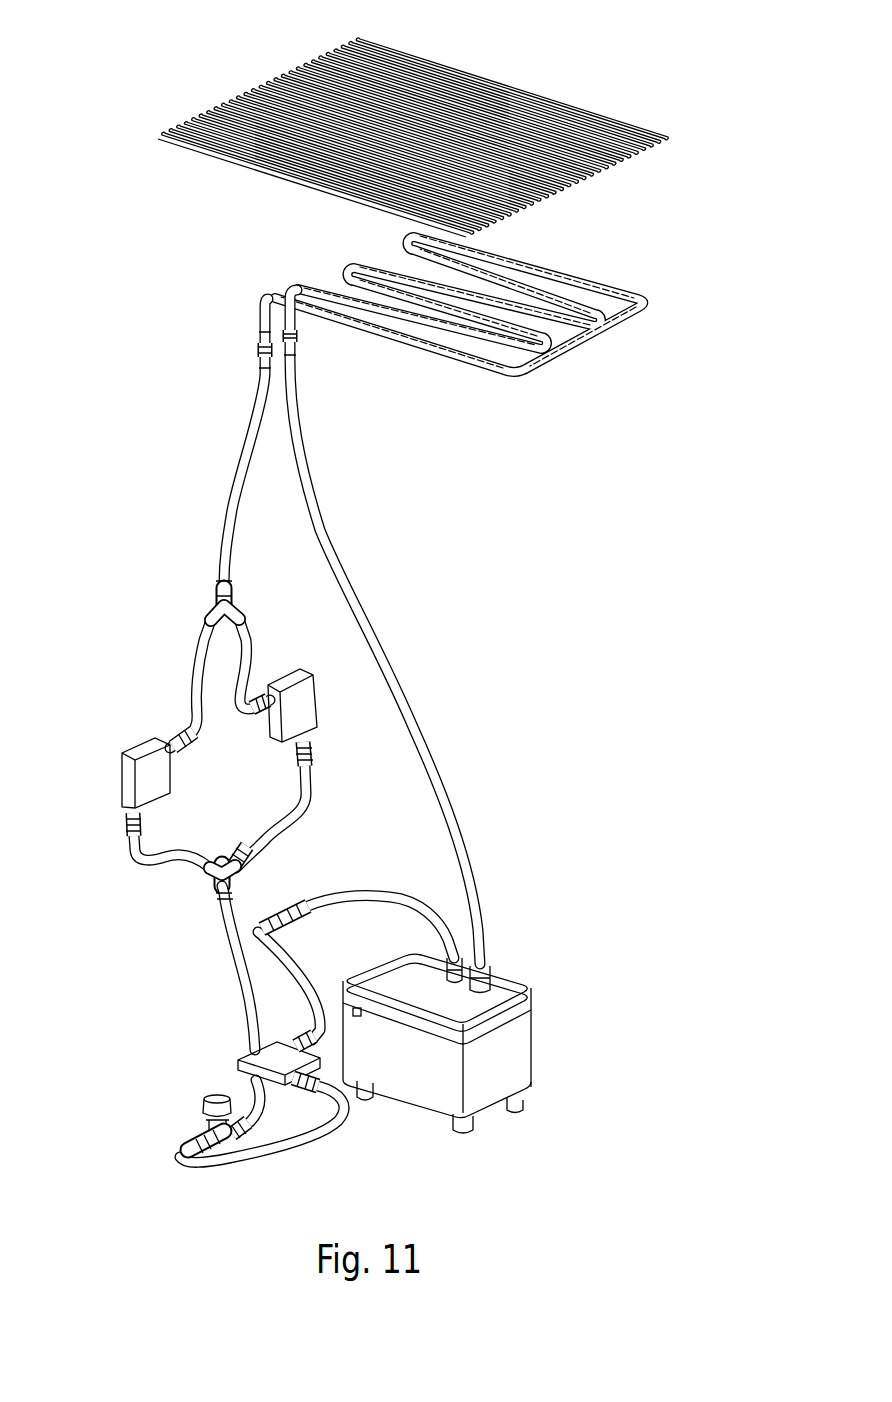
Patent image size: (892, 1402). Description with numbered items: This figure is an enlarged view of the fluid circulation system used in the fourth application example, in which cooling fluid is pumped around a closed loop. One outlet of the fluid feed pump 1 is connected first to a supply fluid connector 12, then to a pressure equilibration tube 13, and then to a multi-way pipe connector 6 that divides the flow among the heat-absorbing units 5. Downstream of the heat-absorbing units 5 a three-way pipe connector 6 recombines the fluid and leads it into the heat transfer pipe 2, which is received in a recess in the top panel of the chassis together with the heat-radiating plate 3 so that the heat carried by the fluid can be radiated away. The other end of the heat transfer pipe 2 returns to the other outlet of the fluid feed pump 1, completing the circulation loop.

The fluid feed pump 1 is at (516, 1043).
The heat transfer pipe 2 is at (490, 288).
The heat-radiating plate 3 is at (413, 129).
The heat-absorbing units 5 is at (255, 827).
The multi-way pipe connector 6 is at (176, 565).
The supply fluid connector 12 is at (311, 872).
The pressure equilibration tube 13 is at (176, 1104).